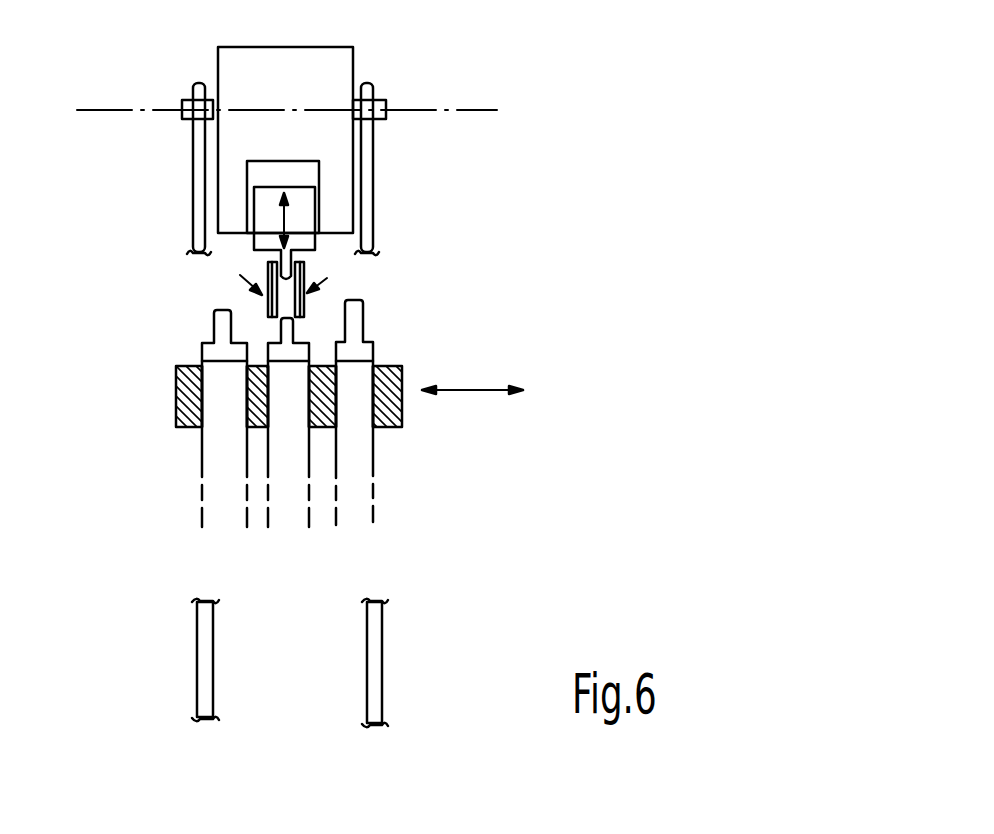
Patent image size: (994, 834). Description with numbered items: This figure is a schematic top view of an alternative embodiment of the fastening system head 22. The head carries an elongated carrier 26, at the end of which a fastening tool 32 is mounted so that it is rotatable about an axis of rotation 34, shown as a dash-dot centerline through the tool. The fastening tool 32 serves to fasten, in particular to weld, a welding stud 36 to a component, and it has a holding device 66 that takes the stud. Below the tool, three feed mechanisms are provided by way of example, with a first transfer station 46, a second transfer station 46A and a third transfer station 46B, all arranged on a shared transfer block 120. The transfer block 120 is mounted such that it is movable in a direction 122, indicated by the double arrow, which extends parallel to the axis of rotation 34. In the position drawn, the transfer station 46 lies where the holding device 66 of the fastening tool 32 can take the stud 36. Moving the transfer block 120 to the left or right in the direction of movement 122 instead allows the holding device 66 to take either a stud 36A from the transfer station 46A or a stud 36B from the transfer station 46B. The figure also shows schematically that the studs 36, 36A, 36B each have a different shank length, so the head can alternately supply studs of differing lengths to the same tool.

The fastening system head 22 is at (705, 217).
The elongated carrier 26 is at (373, 190).
The fastening tool 32 is at (243, 80).
The axis of rotation 34 is at (484, 110).
The welding stud 36 is at (283, 355).
The stud 36A is at (215, 327).
The stud 36B is at (353, 330).
The first transfer station 46 is at (318, 443).
The second transfer station 46A is at (190, 436).
The third transfer station 46B is at (386, 440).
The holding device 66 is at (228, 280).
The transfer block 120 is at (402, 410).
The direction of movement 122 is at (472, 390).